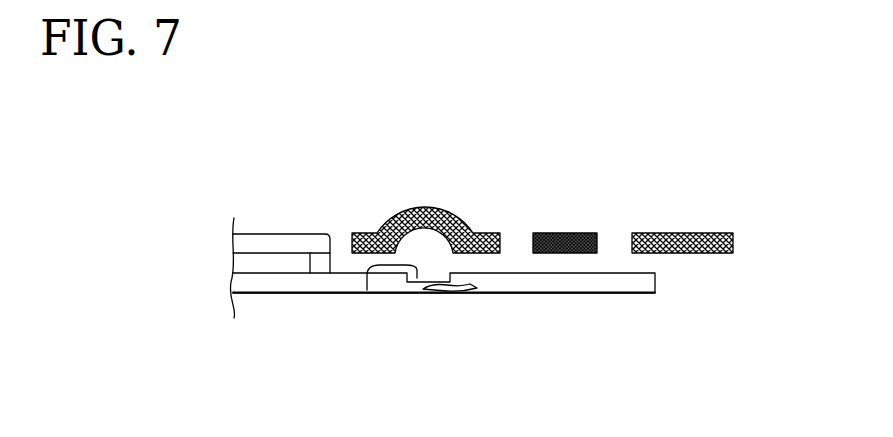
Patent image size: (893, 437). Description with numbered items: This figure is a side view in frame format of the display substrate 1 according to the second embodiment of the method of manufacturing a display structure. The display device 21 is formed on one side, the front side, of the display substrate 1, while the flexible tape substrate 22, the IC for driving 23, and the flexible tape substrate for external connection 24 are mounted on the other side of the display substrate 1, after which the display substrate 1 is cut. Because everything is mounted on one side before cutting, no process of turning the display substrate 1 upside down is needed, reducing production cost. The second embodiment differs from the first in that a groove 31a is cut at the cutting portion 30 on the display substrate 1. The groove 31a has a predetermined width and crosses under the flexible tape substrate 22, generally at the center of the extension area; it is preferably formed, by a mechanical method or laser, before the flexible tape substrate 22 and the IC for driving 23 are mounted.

The display substrate 1 is at (640, 307).
The display device 21 is at (283, 233).
The flexible tape substrate 22 is at (420, 207).
The IC for driving 23 is at (563, 232).
The flexible tape substrate for external connection 24 is at (670, 232).
The cutting portion 30 is at (473, 292).
The groove 31a is at (367, 290).